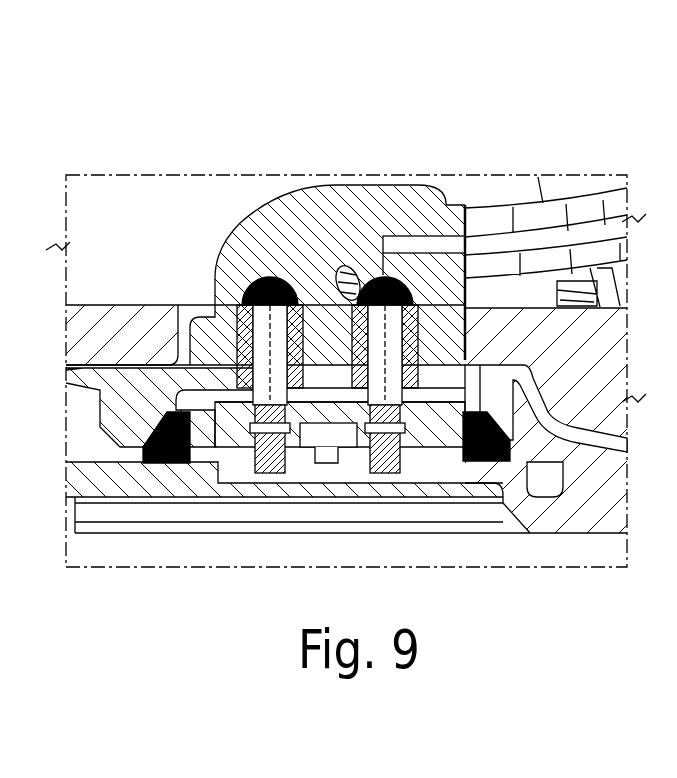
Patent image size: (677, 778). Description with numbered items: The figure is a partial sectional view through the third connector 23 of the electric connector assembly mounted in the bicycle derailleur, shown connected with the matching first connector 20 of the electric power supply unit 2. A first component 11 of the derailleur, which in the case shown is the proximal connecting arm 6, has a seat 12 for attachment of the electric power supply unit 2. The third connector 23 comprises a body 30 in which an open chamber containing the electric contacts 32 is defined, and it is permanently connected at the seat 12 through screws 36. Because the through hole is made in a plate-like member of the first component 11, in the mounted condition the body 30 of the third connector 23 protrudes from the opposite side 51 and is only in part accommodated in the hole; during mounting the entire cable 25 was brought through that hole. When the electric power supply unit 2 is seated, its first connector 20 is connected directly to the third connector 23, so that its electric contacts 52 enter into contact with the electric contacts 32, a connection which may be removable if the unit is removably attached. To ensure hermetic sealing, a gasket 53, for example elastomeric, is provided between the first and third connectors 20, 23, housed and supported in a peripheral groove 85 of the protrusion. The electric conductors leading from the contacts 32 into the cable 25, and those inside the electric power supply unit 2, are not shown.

The electric power supply unit 2 is at (330, 378).
The proximal connecting arm 6 is at (346, 319).
The first component 11 is at (123, 335).
The seat 12 is at (510, 380).
The first connector 20 is at (400, 438).
The third connector 23 is at (375, 165).
The cable 25 is at (585, 205).
The body 30 is at (333, 213).
The electric contacts 32 is at (374, 347).
The screws 36 is at (570, 297).
The opposite side 51 is at (182, 295).
The electric contacts 52 is at (377, 422).
The gasket 53 is at (503, 462).
The peripheral groove 85 is at (209, 452).